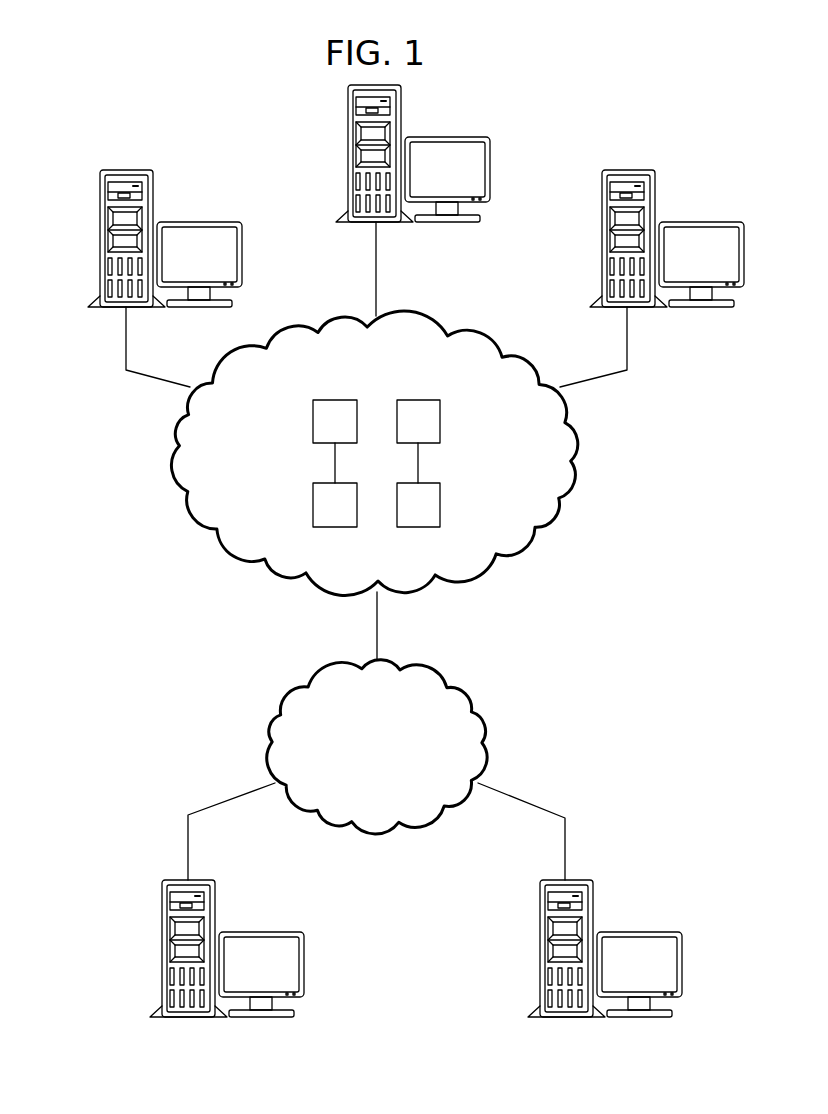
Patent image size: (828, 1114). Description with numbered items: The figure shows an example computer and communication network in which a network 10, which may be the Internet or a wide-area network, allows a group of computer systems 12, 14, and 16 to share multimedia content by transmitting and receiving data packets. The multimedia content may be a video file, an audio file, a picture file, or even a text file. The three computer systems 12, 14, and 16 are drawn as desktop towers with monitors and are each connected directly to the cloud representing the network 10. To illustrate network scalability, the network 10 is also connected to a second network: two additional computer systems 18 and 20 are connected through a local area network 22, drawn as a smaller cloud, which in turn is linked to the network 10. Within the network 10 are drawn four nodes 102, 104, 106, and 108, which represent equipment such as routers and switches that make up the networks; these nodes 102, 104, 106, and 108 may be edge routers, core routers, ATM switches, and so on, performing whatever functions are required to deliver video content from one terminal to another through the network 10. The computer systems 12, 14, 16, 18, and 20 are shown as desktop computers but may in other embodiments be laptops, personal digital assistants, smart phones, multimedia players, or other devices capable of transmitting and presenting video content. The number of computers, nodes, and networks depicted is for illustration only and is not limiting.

The network 10 is at (167, 451).
The computer system 12 is at (100, 240).
The computer system 14 is at (348, 157).
The computer system 16 is at (655, 200).
The computer system 18 is at (178, 1018).
The computer system 20 is at (575, 1018).
The local area network 22 is at (262, 745).
The node 102 is at (313, 418).
The node 104 is at (440, 418).
The node 106 is at (440, 501).
The node 108 is at (313, 501).